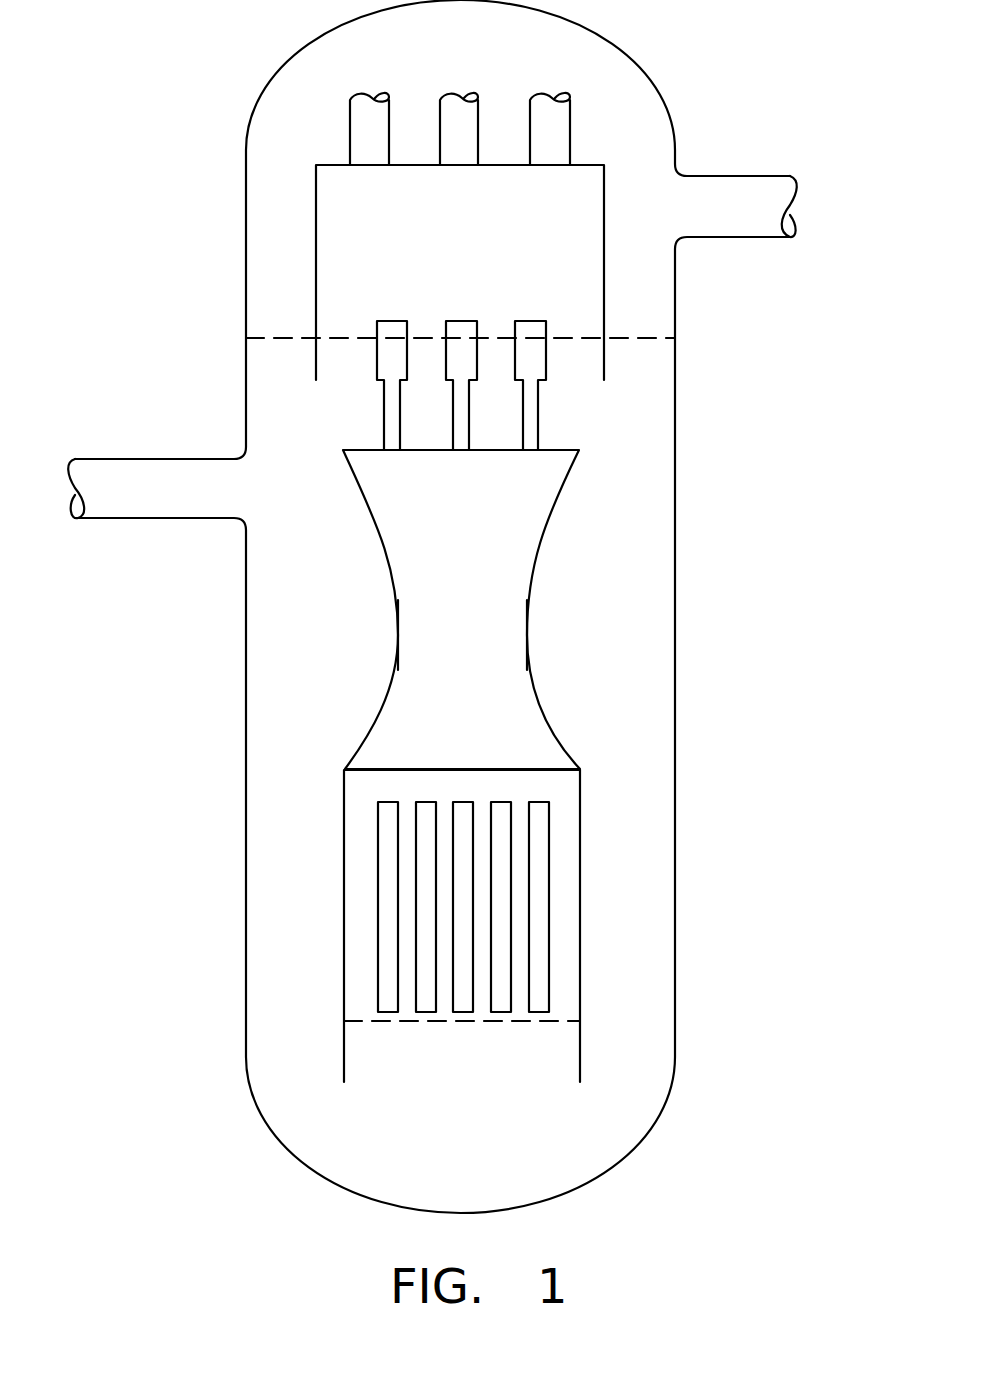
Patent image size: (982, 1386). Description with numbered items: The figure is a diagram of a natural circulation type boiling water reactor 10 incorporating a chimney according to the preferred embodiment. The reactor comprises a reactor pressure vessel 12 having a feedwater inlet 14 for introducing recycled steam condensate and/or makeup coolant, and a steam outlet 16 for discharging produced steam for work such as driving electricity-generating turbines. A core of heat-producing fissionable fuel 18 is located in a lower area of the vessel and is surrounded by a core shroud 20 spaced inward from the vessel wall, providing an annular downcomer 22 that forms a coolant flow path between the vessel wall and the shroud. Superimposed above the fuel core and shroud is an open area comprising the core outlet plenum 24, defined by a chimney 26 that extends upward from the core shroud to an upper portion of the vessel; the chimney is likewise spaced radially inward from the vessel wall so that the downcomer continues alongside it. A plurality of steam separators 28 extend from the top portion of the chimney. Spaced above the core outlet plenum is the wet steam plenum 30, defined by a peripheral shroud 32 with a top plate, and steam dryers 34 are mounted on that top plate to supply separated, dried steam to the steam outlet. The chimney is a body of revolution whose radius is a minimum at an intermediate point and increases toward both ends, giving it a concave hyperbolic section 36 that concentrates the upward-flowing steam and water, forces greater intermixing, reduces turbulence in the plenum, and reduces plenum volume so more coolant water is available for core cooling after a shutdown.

The boiling water reactor 10 is at (692, 730).
The reactor pressure vessel 12 is at (248, 693).
The feedwater inlet 14 is at (188, 459).
The steam outlet 16 is at (760, 237).
The fuel core 18 is at (548, 840).
The core shroud 20 is at (581, 790).
The annular downcomer 22 is at (313, 837).
The core outlet plenum 24 is at (490, 662).
The chimney 26 is at (540, 528).
The steam separators 28 is at (545, 363).
The wet steam plenum 30 is at (478, 257).
The peripheral shroud 32 is at (604, 290).
The steam dryers 34 is at (571, 131).
The concave hyperbolic section 36 is at (398, 608).